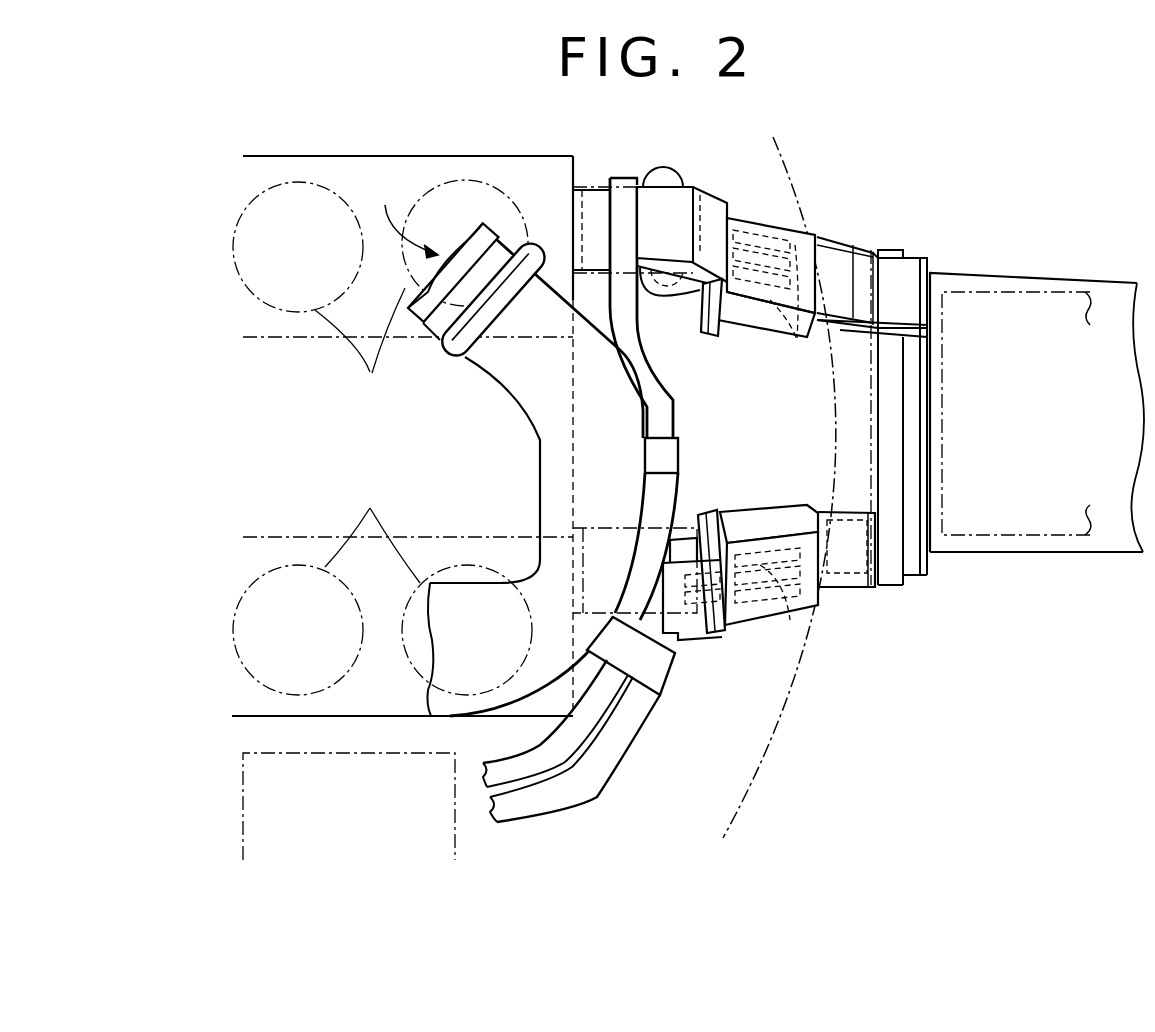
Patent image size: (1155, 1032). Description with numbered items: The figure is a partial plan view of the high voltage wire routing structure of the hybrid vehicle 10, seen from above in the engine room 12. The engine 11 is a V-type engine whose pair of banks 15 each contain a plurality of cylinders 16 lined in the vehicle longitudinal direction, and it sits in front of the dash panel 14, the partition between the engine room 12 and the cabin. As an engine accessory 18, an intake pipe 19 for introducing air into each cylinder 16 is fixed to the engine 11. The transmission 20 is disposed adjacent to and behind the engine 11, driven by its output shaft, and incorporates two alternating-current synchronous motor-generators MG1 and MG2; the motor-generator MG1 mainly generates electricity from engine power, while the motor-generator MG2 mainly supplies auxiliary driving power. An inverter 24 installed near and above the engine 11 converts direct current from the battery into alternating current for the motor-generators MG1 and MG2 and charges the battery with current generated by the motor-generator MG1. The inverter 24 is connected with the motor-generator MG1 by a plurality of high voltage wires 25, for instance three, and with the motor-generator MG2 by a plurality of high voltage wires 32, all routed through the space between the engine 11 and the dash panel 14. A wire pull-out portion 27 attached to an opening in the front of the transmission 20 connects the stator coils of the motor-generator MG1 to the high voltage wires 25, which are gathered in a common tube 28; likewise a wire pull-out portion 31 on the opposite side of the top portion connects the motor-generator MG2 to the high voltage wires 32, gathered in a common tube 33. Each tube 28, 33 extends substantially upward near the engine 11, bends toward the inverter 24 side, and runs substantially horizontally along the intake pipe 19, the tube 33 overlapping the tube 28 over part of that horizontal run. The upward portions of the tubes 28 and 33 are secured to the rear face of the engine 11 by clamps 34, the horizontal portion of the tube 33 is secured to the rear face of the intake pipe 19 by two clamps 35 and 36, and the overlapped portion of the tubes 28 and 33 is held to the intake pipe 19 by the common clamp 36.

The hybrid vehicle 10 is at (868, 224).
The engine 11 is at (245, 720).
The engine room 12 is at (643, 833).
The dash panel 14 is at (768, 733).
The bank 15 is at (247, 313).
The cylinder 16 is at (367, 435).
The engine accessory 18 is at (560, 447).
The intake pipe 19 is at (494, 438).
The transmission 20 is at (1068, 545).
The inverter 24 is at (243, 812).
The high voltage wires 25 is at (757, 605).
The wire pull-out portion 27 is at (762, 523).
The tube 28 is at (622, 733).
The wire pull-out portion 31 is at (745, 218).
The high voltage wires 32 is at (790, 322).
The tube 33 is at (657, 375).
The clamp 34 is at (700, 217).
The clamp 35 is at (665, 458).
The clamp 36 is at (655, 672).
The motor-generator MG1 is at (853, 590).
The motor-generator MG2 is at (1010, 537).